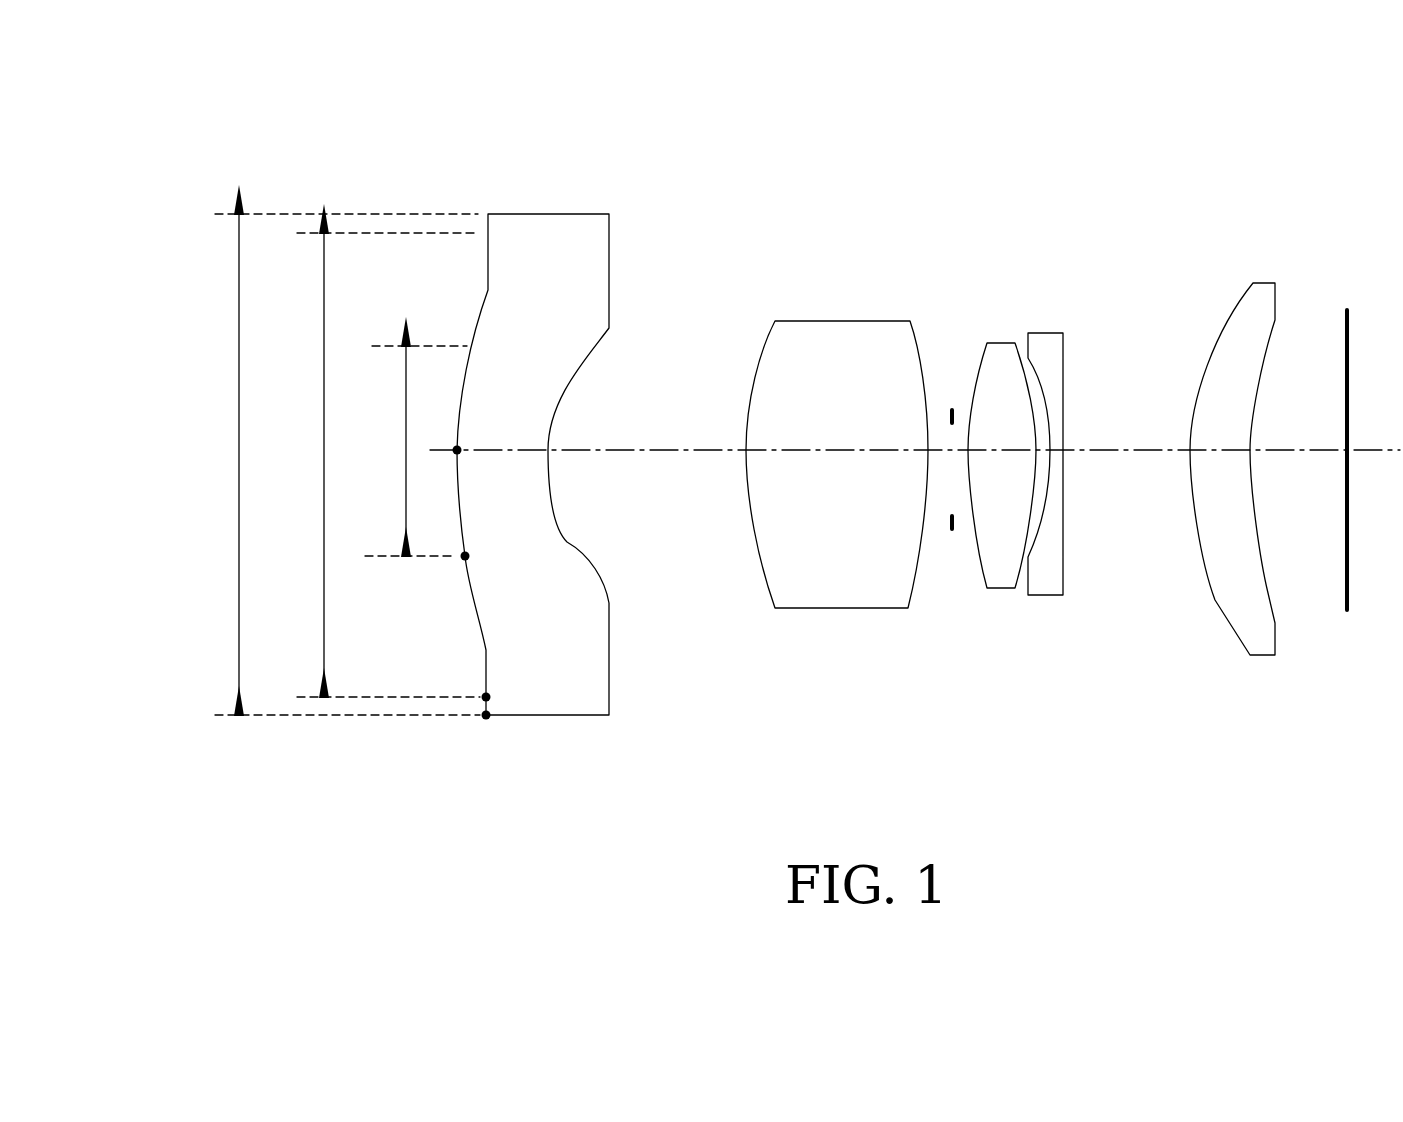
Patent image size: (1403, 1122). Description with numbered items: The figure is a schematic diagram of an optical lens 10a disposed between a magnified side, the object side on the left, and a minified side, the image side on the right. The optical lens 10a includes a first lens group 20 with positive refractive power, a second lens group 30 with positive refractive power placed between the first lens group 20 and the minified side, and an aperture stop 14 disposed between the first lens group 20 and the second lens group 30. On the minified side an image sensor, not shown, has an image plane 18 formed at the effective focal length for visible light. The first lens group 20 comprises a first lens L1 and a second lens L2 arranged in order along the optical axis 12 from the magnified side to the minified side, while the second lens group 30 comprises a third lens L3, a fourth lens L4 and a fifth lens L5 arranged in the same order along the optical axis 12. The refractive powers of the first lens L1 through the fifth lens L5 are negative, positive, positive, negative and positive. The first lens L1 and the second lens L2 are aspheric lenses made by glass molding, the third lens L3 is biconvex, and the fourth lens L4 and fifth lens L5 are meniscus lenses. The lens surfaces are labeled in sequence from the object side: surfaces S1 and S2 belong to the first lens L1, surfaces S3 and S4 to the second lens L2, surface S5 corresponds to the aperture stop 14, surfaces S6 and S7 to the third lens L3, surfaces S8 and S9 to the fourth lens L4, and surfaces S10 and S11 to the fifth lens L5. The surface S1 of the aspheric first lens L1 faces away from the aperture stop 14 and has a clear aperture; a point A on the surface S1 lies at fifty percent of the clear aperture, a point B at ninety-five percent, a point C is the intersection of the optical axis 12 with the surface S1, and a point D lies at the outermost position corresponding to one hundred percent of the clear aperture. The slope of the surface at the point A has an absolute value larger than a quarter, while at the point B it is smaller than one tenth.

The optical lens 10a is at (392, 93).
The first lens group 20 is at (528, 103).
The second lens group 30 is at (996, 155).
The optical axis 12 is at (680, 450).
The aperture stop 14 is at (952, 410).
The image plane 18 is at (1347, 563).
The first lens L1 is at (547, 214).
The second lens L2 is at (832, 321).
The third lens L3 is at (1000, 345).
The fourth lens L4 is at (1050, 333).
The fifth lens L5 is at (1268, 282).
The surface S1 is at (476, 606).
The image-side surface of first lens S2 is at (567, 542).
The object-side surface of second lens S3 is at (757, 548).
The image-side surface of second lens S4 is at (920, 548).
The aperture stop surface S5 is at (952, 528).
The object-side surface of third lens S6 is at (973, 547).
The image-side surface of third lens S7 is at (1022, 568).
The object-side surface of fourth lens S8 is at (1030, 553).
The image-side surface of fourth lens S9 is at (1063, 570).
The object-side surface of fifth lens S10 is at (1217, 603).
The image-side surface of fifth lens S11 is at (1268, 592).
The point A is at (465, 556).
The point B is at (486, 697).
The point C is at (457, 450).
The point D is at (486, 715).